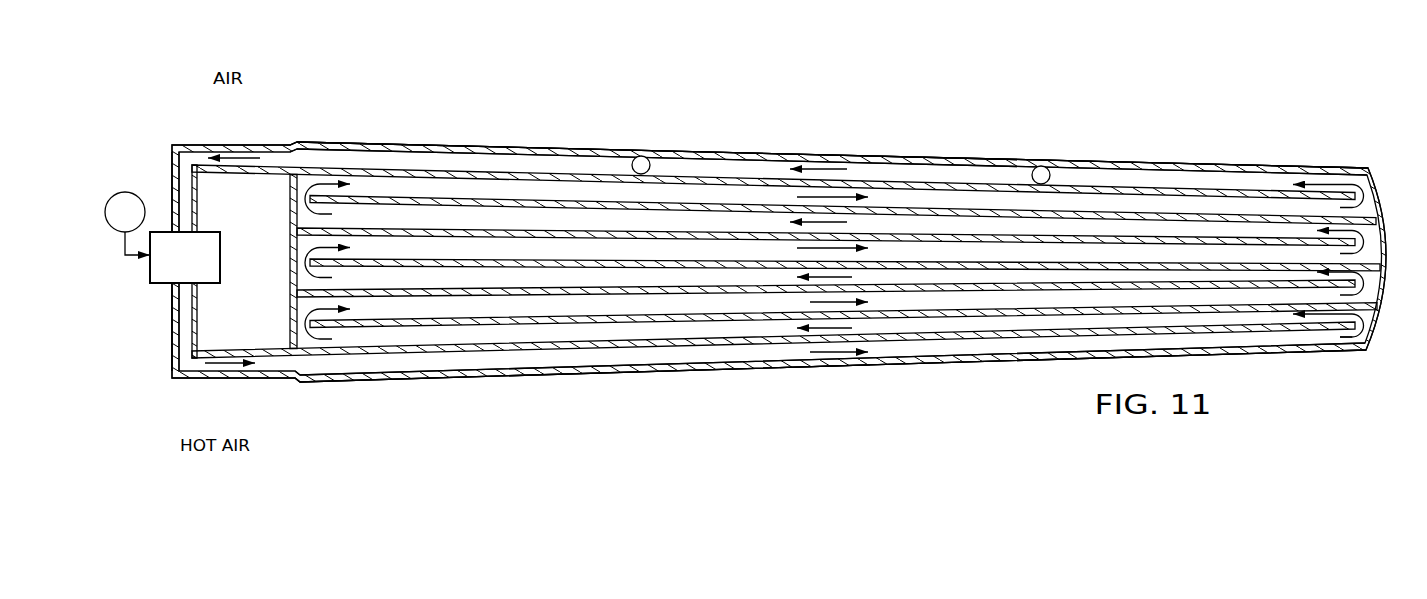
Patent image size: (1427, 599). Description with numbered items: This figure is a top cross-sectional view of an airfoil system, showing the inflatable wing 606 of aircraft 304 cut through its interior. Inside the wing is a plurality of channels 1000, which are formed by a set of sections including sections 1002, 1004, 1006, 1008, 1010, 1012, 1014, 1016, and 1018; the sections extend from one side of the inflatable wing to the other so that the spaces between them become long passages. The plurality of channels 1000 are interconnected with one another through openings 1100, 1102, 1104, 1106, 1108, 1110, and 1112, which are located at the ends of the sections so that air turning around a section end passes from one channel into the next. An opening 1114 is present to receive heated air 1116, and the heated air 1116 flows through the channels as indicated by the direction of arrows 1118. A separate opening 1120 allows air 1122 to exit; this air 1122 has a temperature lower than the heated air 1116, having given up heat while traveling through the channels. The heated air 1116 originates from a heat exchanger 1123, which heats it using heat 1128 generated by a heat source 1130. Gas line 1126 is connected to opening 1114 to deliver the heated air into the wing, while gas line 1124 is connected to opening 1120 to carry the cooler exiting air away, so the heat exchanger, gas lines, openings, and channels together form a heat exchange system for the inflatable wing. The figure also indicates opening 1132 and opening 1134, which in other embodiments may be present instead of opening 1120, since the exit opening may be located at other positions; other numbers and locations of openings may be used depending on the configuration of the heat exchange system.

The plurality of channels 1000 is at (1067, 95).
The aircraft 304 is at (1185, 140).
The inflatable wing 606 is at (1102, 150).
The section 1002 is at (897, 365).
The section 1004 is at (730, 350).
The section 1006 is at (578, 320).
The section 1008 is at (967, 292).
The section 1010 is at (517, 265).
The section 1012 is at (935, 235).
The section 1014 is at (470, 197).
The section 1016 is at (730, 162).
The section 1018 is at (842, 157).
The opening 1100 is at (1322, 182).
The opening 1102 is at (300, 190).
The opening 1104 is at (1362, 208).
The opening 1106 is at (300, 252).
The opening 1108 is at (1368, 315).
The opening 1110 is at (300, 332).
The opening 1112 is at (1312, 337).
The opening 1114 is at (270, 378).
The heated air 1116 is at (227, 375).
The arrows 1118 is at (825, 372).
The opening 1120 is at (283, 143).
The air 1122 is at (237, 145).
The heat exchanger 1123 is at (164, 270).
The gas line 1124 is at (172, 167).
The gas line 1126 is at (172, 345).
The heat 1128 is at (130, 256).
The heat source 1130 is at (123, 191).
The opening 1132 is at (645, 155).
The opening 1134 is at (1038, 166).